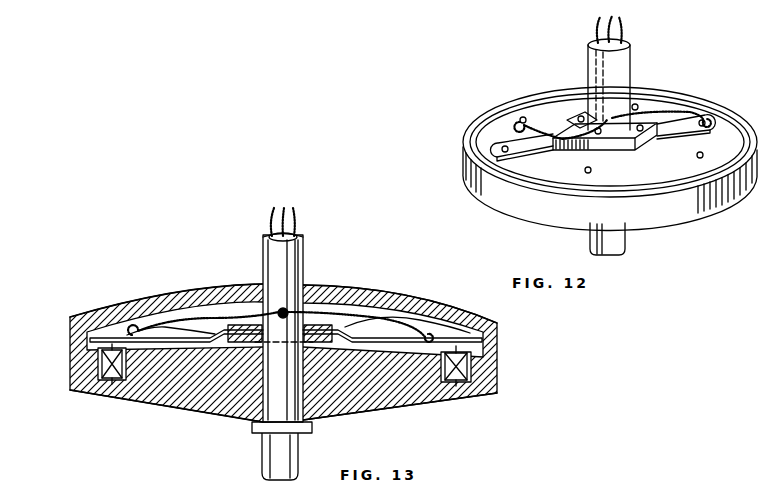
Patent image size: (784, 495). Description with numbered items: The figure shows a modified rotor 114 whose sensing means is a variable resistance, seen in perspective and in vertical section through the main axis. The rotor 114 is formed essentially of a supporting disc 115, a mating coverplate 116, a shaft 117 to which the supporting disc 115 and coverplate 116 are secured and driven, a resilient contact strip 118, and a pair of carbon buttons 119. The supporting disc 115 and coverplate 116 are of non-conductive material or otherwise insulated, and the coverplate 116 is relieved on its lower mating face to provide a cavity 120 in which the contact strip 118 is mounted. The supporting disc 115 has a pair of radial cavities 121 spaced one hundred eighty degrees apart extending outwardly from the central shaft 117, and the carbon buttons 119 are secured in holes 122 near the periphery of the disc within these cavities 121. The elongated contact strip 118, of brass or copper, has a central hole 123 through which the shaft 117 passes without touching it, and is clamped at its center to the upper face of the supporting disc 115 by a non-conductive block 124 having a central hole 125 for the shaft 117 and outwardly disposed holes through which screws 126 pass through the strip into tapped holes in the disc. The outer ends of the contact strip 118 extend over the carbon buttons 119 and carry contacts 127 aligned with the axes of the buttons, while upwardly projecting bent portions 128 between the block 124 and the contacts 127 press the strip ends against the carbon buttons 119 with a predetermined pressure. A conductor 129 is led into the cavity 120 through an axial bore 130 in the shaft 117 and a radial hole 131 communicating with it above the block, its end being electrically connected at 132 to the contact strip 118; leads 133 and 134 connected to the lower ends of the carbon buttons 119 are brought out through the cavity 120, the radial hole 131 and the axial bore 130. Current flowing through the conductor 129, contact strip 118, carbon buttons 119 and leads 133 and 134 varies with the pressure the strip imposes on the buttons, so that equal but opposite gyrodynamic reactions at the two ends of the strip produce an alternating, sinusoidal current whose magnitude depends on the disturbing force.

In FIG. 13, the rotor 114 is at (282, 345).
In FIG. 12, the supporting disc 115 is at (698, 214).
In FIG. 13, the supporting disc 115 is at (497, 368).
In FIG. 13, the coverplate 116 is at (452, 320).
In FIG. 12, the shaft 117 is at (609, 73).
In FIG. 13, the shaft 117 is at (303, 256).
In FIG. 13, the resilient contact strip 118 is at (140, 318).
In FIG. 13, the carbon buttons 119 is at (470, 398).
In FIG. 13, the cavity 120 is at (147, 306).
In FIG. 12, the radial cavities 121 is at (490, 147).
In FIG. 13, the holes 122 is at (76, 368).
In FIG. 13, the central hole 123 is at (335, 322).
In FIG. 12, the non-conductive block 124 is at (632, 149).
In FIG. 13, the central hole 125 is at (252, 284).
In FIG. 12, the screws 126 is at (576, 116).
In FIG. 13, the contacts 127 is at (72, 326).
In FIG. 13, the upwardly projecting bent portions 128 is at (398, 306).
In FIG. 13, the conductor 129 is at (285, 206).
In FIG. 13, the axial bore 130 is at (298, 237).
In FIG. 13, the radial hole 131 is at (305, 302).
In FIG. 13, the electrical connection 132 is at (228, 290).
In FIG. 13, the lead 133 is at (270, 212).
In FIG. 13, the lead 134 is at (297, 208).